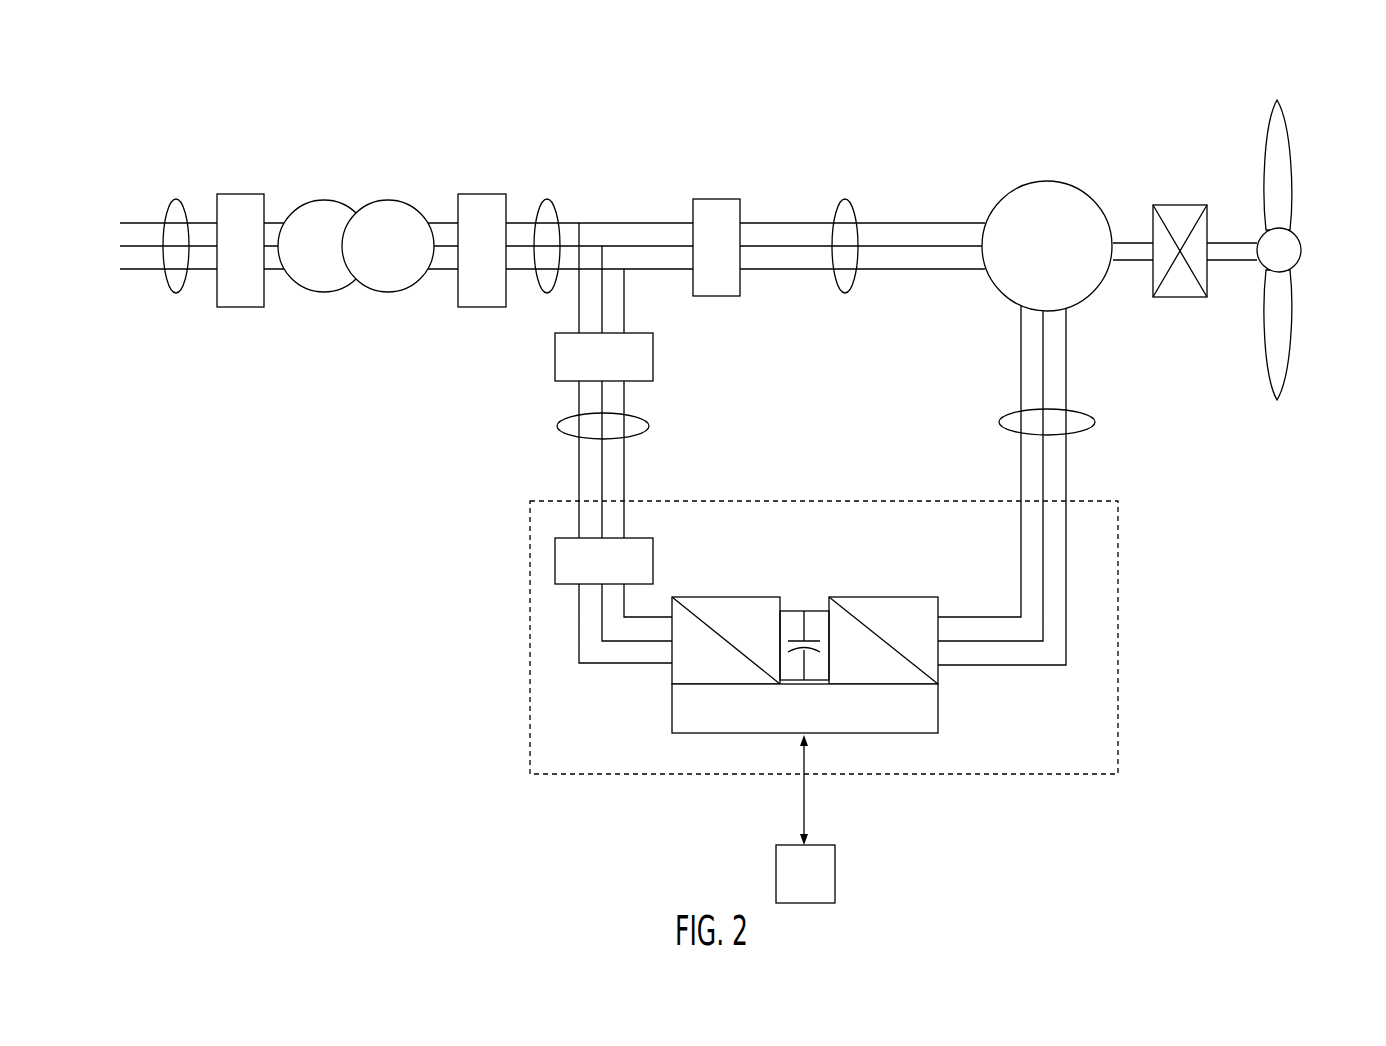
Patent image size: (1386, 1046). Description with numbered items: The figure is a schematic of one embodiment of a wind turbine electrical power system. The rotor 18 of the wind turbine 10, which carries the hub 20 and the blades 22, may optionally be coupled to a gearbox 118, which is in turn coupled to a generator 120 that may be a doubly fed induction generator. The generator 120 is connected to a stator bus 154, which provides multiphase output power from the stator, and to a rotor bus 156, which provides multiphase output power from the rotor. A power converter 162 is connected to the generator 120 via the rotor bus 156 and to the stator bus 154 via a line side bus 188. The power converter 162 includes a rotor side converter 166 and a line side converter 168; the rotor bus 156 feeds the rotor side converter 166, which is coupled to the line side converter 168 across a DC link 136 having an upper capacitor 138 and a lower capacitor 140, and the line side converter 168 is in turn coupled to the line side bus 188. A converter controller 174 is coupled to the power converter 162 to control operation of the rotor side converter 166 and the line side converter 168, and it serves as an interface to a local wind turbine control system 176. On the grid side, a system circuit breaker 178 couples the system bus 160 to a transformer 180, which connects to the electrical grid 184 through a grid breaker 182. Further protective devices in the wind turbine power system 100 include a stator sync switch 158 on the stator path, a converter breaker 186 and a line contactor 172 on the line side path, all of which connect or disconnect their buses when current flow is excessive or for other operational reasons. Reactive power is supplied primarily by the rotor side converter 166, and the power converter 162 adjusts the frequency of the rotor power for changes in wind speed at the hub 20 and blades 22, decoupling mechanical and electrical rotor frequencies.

The wind turbine 10 is at (1316, 103).
The rotor 18 is at (1311, 291).
The hub 20 is at (1303, 252).
The blades 22 is at (1285, 181).
The wind turbine power system 100 is at (435, 693).
The gearbox 118 is at (1178, 205).
The generator 120 is at (1045, 183).
The DC link 136 is at (812, 611).
The upper capacitor 138 is at (776, 600).
The lower capacitor 140 is at (795, 640).
The stator bus 154 is at (842, 202).
The rotor bus 156 is at (1097, 420).
The stator sync switch 158 is at (713, 199).
The system bus 160 is at (542, 202).
The power converter 162 is at (1115, 644).
The rotor side converter 166 is at (938, 677).
The line side converter 168 is at (672, 675).
The line contactor 172 is at (555, 562).
The converter controller 174 is at (713, 735).
The local wind turbine control system 176 is at (838, 842).
The system circuit breaker 178 is at (482, 194).
The transformer 180 is at (378, 198).
The grid breaker 182 is at (238, 194).
The electrical grid 184 is at (175, 204).
The converter breaker 186 is at (555, 359).
The line side bus 188 is at (557, 427).